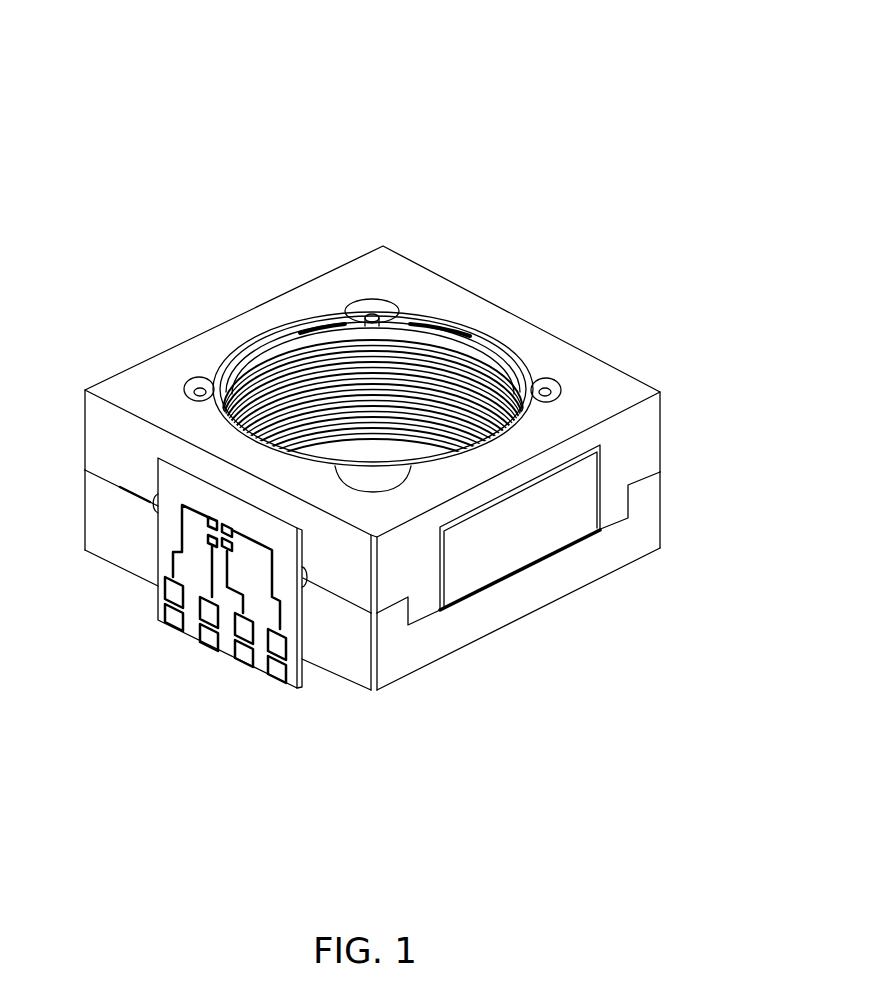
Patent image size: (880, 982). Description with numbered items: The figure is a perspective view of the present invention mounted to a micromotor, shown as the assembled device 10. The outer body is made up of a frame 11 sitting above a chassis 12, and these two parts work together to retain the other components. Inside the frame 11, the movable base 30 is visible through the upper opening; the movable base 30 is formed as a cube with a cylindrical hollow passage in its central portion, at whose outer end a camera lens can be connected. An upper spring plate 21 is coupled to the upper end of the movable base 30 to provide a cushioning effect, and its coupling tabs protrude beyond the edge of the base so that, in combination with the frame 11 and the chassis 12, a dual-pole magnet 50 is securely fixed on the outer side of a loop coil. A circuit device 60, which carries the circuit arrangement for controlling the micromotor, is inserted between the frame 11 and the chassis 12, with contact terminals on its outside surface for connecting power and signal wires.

The camera module 10 is at (168, 340).
The frame 11 is at (633, 392).
The chassis 12 is at (647, 525).
The upper spring plate 21 is at (490, 347).
The movable base 30 is at (338, 357).
The dual-pole magnet 50 is at (540, 522).
The circuit device 60 is at (160, 617).